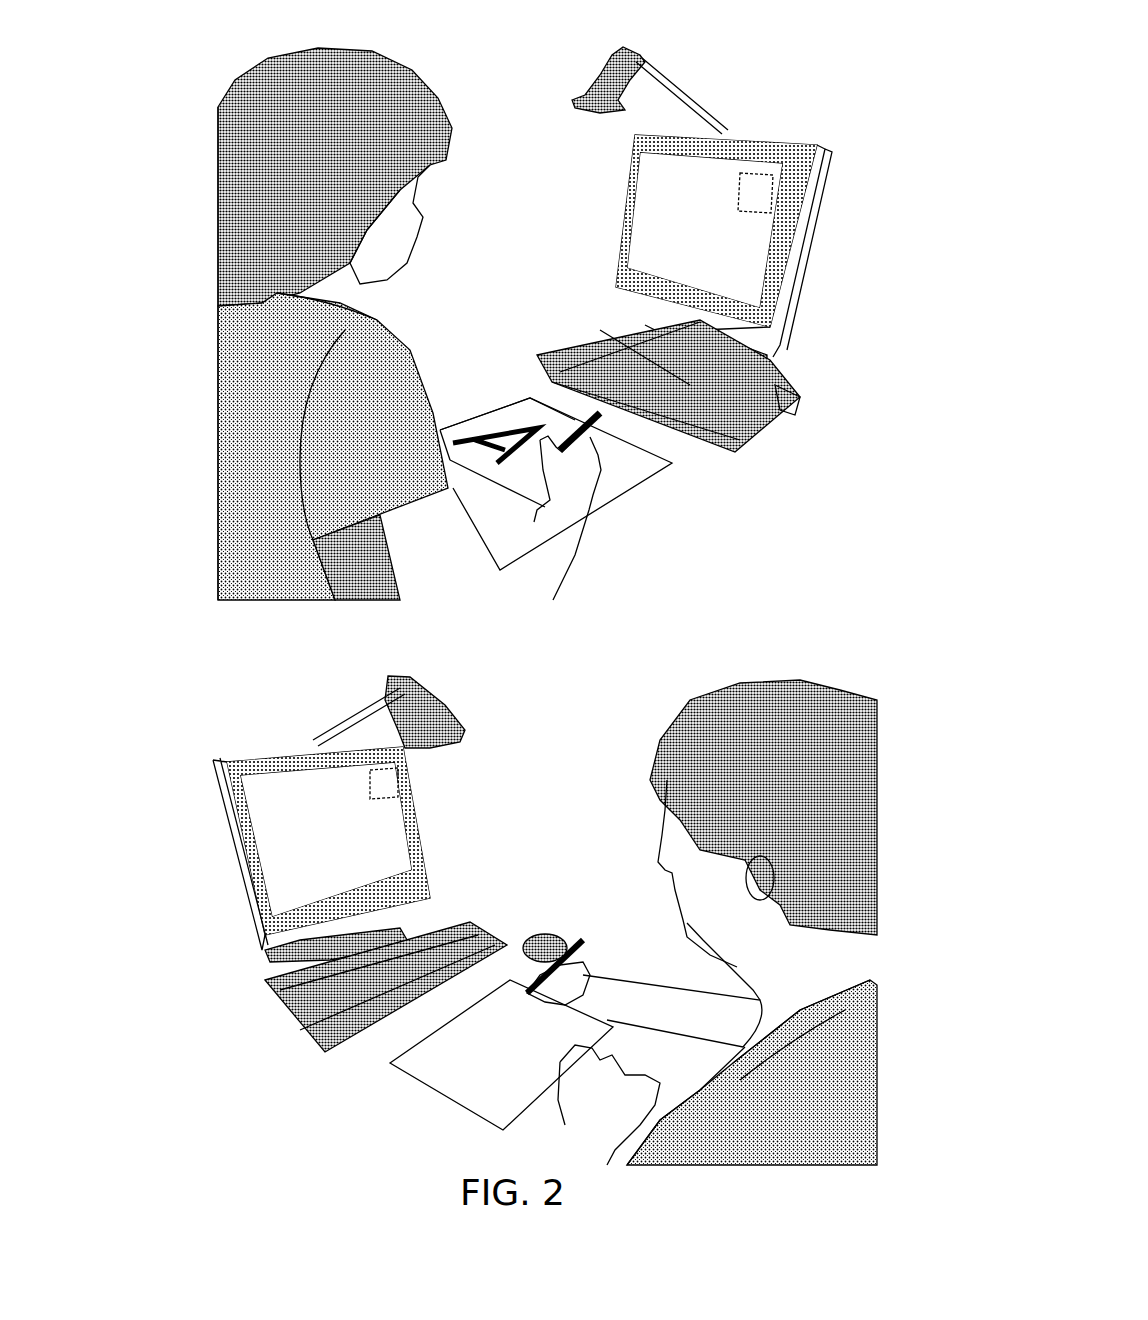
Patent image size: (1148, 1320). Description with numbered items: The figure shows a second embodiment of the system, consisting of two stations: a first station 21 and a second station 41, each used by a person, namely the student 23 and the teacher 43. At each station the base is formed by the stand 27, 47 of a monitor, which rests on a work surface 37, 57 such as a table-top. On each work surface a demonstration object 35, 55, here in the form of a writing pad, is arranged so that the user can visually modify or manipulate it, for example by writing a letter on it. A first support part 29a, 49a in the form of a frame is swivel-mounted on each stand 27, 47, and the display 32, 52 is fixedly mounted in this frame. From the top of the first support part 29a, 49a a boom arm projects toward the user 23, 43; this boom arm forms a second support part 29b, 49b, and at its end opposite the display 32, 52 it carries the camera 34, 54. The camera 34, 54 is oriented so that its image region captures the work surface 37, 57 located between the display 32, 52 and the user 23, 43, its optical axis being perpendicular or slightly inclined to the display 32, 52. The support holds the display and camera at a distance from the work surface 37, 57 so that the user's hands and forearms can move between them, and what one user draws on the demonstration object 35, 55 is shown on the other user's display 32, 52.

The second station 41 is at (783, 449).
The teacher 43 is at (195, 208).
The stand 47 is at (775, 370).
The first support part 49a is at (780, 277).
The second support part 49b is at (690, 95).
The display 52 is at (755, 240).
The camera 54 is at (555, 95).
The demonstration object 55 is at (505, 415).
The work surface 57 is at (665, 505).
The first station 21 is at (230, 941).
The student 23 is at (643, 785).
The stand 27 is at (268, 978).
The first support part 29a is at (233, 848).
The second support part 29b is at (337, 722).
The display 32 is at (233, 785).
The camera 34 is at (455, 692).
The demonstration object 35 is at (500, 1105).
The work surface 37 is at (398, 1095).